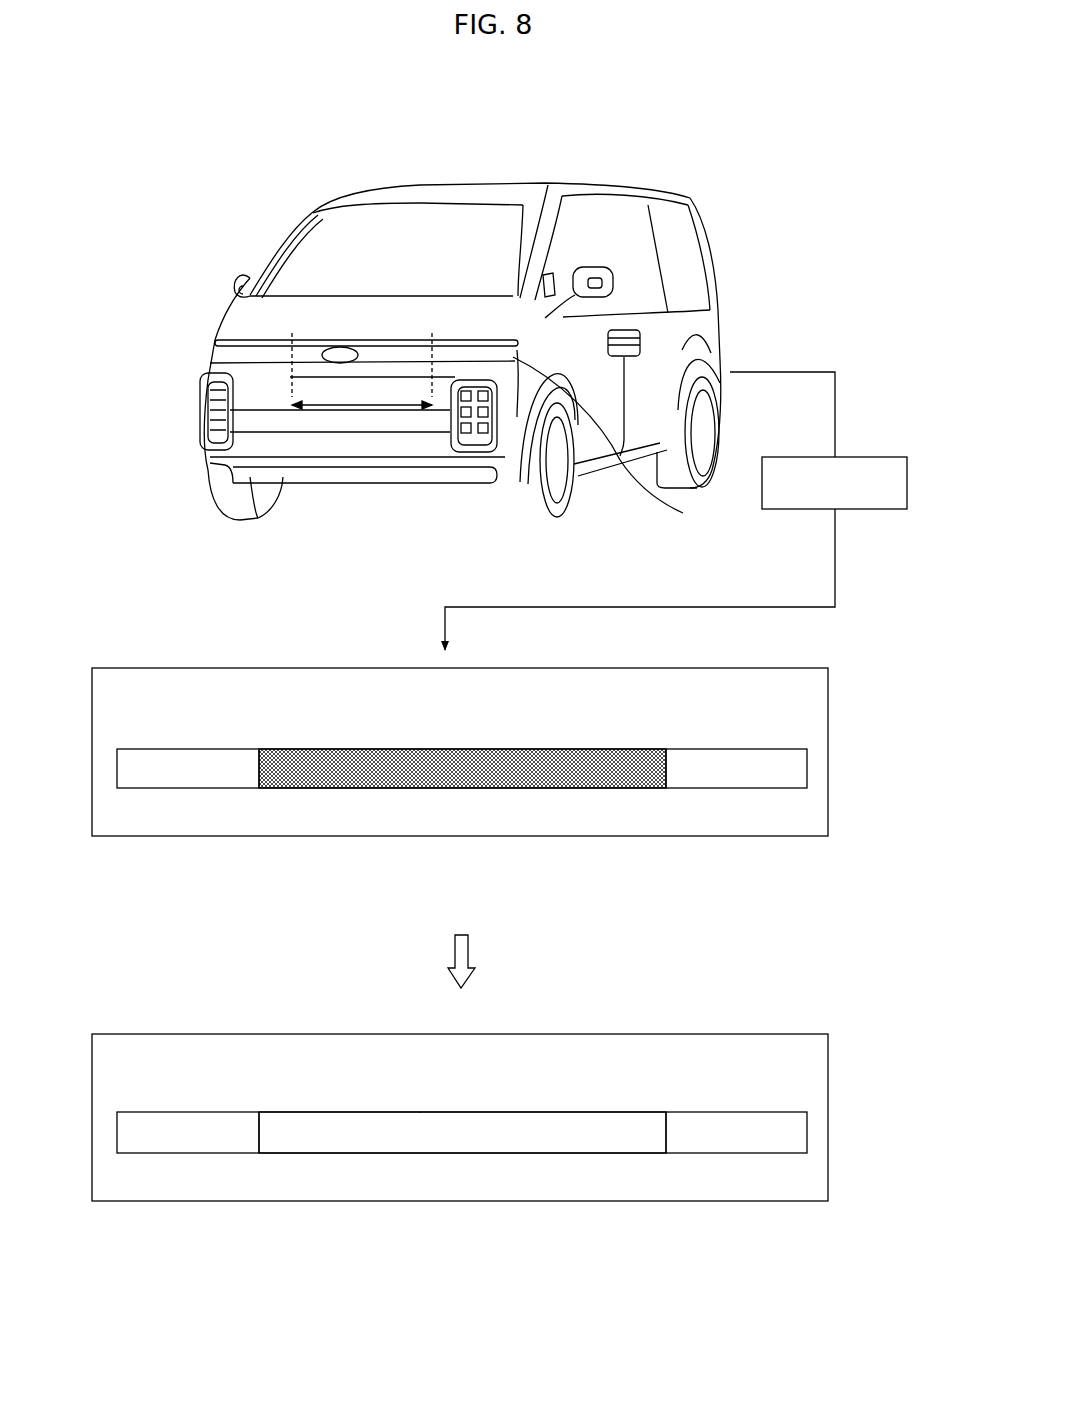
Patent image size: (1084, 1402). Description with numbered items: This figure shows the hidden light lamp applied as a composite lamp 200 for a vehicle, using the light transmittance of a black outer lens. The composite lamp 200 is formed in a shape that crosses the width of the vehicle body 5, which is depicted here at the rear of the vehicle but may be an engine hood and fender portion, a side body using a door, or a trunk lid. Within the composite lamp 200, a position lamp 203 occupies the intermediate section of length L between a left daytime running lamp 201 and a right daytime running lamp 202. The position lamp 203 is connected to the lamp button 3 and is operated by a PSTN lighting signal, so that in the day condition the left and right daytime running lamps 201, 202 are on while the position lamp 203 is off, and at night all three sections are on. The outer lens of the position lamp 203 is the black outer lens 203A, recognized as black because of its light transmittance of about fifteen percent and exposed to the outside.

The lamp button 3 is at (693, 262).
The vehicle body 5 is at (607, 441).
The composite lamp 200 is at (240, 122).
The left daytime running lamp 201 is at (222, 338).
The right daytime running lamp 202 is at (513, 346).
The position lamp 203 is at (402, 345).
The black outer lens 203A is at (313, 344).